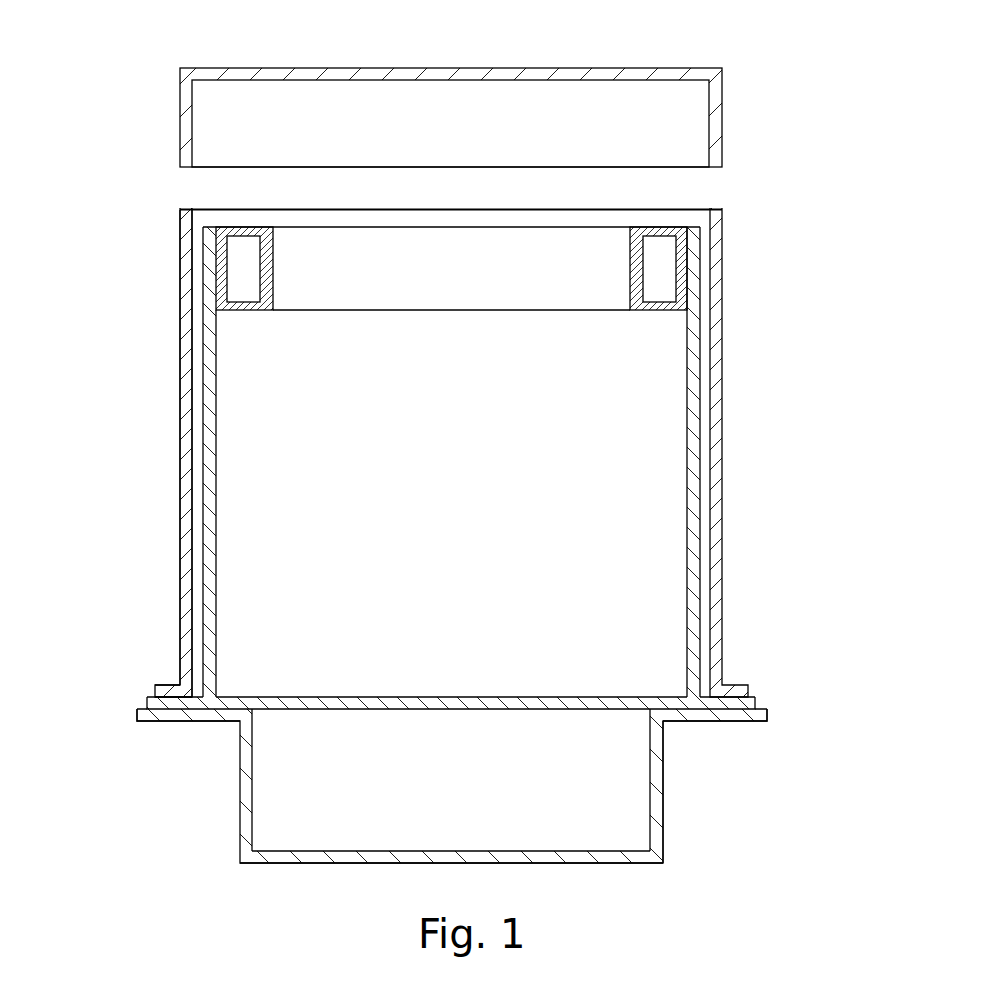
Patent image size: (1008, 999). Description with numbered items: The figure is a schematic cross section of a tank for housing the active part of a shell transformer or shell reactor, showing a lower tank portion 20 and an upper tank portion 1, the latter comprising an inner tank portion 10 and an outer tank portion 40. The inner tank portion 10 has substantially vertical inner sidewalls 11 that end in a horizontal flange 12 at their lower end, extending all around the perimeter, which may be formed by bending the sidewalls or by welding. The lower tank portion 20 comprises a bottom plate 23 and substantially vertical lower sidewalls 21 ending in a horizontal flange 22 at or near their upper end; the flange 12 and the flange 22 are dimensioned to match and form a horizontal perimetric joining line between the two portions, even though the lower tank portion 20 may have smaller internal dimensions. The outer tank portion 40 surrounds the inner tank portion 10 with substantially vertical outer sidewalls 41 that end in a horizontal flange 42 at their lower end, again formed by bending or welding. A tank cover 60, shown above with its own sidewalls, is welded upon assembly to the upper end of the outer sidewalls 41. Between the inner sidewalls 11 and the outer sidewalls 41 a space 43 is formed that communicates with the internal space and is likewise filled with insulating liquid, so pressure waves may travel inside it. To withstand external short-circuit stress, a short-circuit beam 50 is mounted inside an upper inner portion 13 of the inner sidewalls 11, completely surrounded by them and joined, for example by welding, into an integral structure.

The upper tank portion 1 is at (781, 397).
The inner tank portion 10 is at (453, 464).
The inner sidewalls 11 is at (217, 437).
The flange 12 is at (148, 702).
The upper inner portion 13 is at (687, 285).
The lower tank portion 20 is at (405, 813).
The lower sidewalls 21 is at (663, 803).
The flange 22 is at (137, 720).
The bottom plate 23 is at (337, 865).
The outer tank portion 40 is at (411, 452).
The outer sidewalls 41 is at (180, 352).
The flange 42 is at (172, 683).
The space 43 is at (200, 502).
The short-circuit beam 50 is at (686, 228).
The tank cover 60 is at (375, 68).